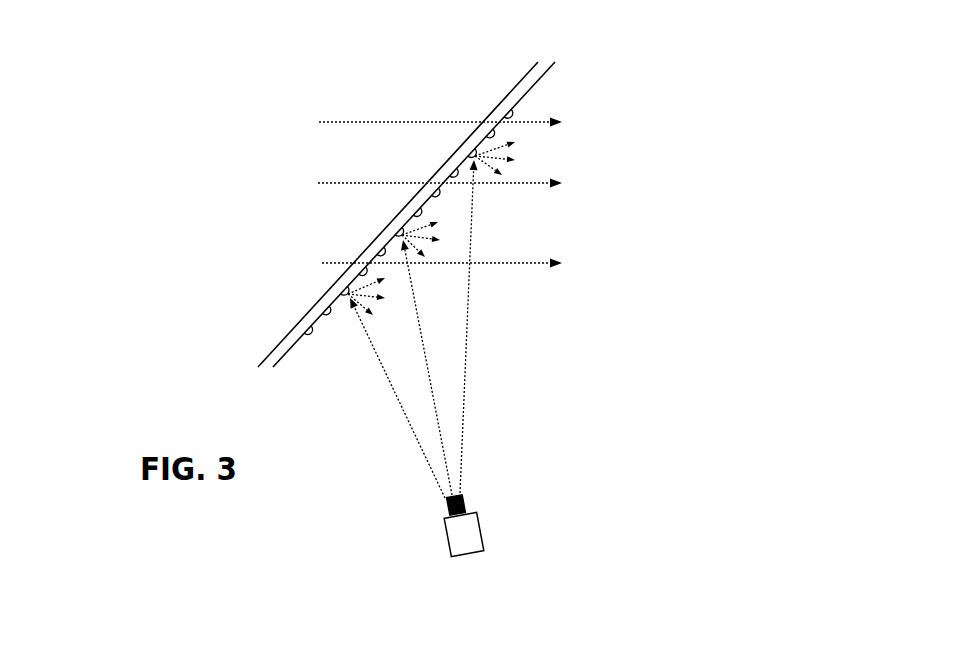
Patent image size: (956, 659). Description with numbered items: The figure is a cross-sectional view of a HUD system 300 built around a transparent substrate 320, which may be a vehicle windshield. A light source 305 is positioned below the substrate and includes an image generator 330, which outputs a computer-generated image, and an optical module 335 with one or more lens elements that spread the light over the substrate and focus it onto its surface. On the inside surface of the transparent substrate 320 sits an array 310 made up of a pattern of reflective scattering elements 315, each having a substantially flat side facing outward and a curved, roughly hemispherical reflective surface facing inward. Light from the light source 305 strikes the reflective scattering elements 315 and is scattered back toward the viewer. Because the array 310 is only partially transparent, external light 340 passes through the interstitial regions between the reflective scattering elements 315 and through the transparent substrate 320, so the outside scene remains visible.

The HUD system 300 is at (149, 102).
The light source 305 is at (474, 388).
The array 310 is at (505, 291).
The reflective scattering elements 315 is at (312, 335).
The transparent substrate 320 is at (510, 90).
The image generator 330 is at (443, 537).
The optical module 335 is at (466, 500).
The external light 340 is at (337, 122).